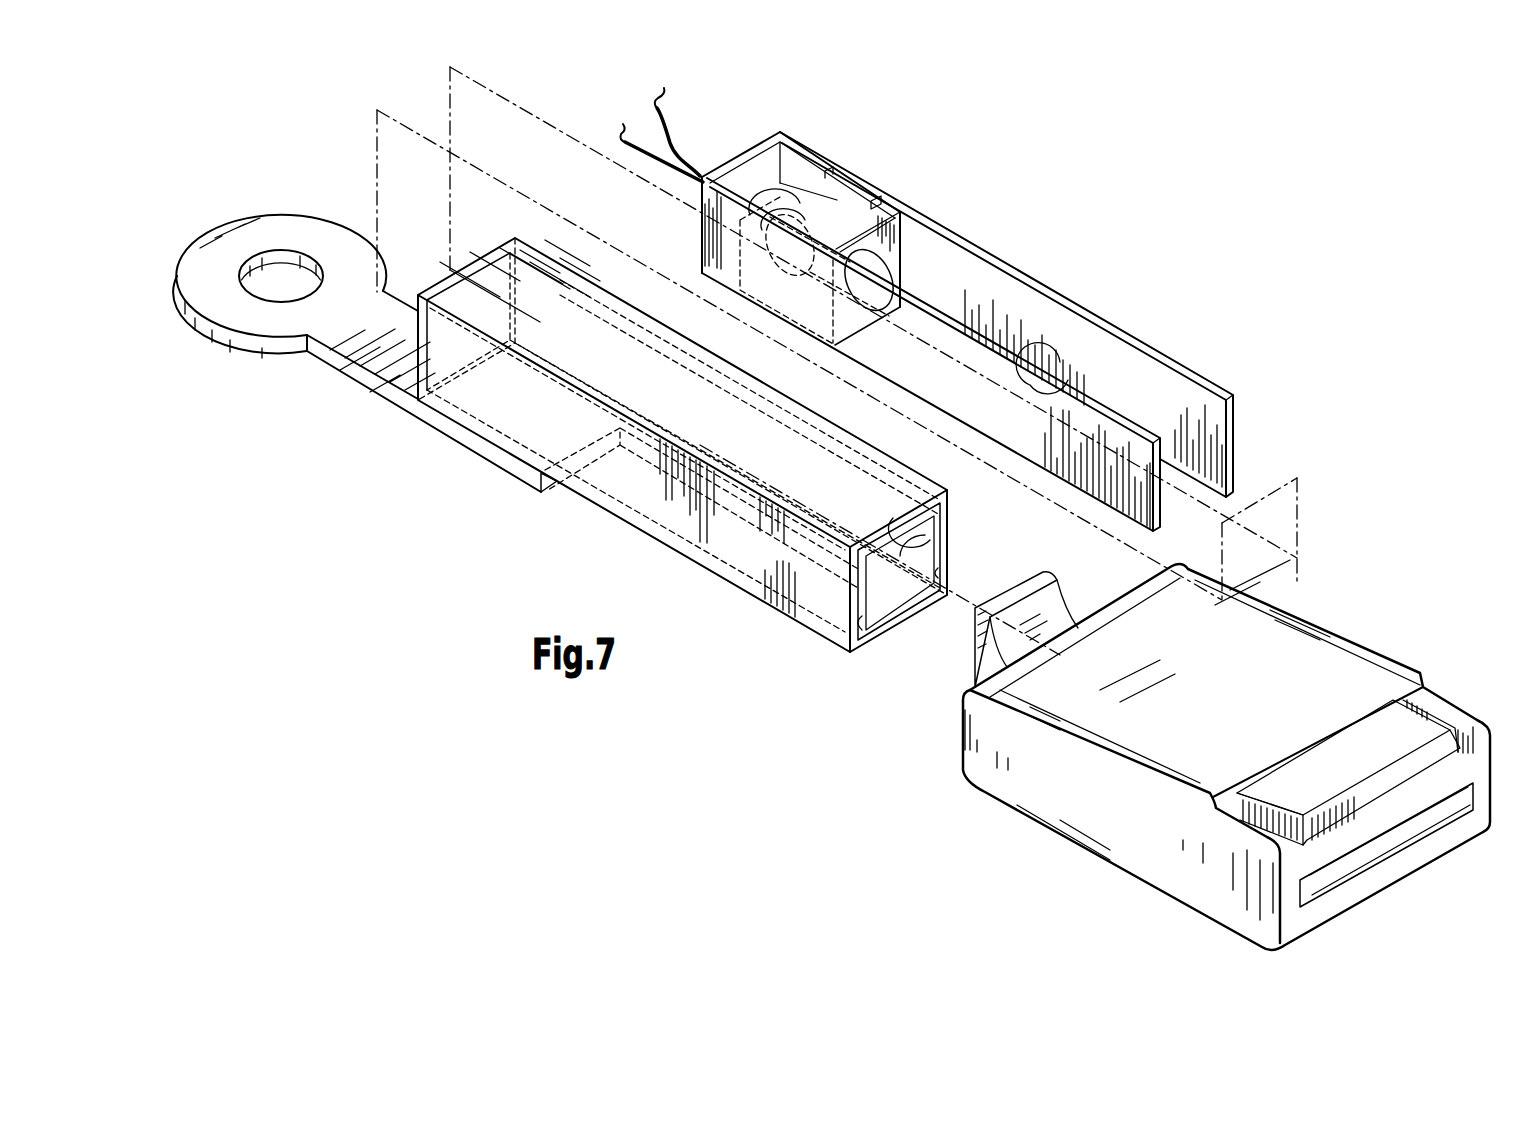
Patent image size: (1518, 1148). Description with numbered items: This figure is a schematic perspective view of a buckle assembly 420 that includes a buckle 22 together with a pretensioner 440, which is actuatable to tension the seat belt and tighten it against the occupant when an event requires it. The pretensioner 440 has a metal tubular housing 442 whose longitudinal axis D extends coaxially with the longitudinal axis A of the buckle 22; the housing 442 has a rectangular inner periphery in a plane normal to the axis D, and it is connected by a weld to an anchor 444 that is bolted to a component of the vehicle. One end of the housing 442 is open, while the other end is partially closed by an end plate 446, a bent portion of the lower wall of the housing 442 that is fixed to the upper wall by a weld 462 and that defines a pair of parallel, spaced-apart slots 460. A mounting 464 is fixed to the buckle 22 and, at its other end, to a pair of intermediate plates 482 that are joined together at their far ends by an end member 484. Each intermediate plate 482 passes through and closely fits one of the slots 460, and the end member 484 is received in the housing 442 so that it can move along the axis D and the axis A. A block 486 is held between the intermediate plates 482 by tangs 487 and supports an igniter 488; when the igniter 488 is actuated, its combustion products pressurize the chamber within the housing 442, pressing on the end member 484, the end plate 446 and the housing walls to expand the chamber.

The buckle 22 is at (1314, 609).
The buckle assembly 420 is at (1052, 231).
The pretensioner 440 is at (448, 458).
The tubular housing 442 is at (627, 523).
The anchor 444 is at (229, 305).
The end plate 446 is at (590, 496).
The slots 460 is at (947, 573).
The weld 462 is at (910, 556).
The mounting 464 is at (975, 648).
The intermediate plates 482 is at (1060, 362).
The end member 484 is at (745, 152).
The block 486 is at (810, 173).
The tangs 487 is at (840, 228).
The igniter 488 is at (858, 204).
The longitudinal axis A is at (1445, 866).
The longitudinal axis D is at (790, 524).